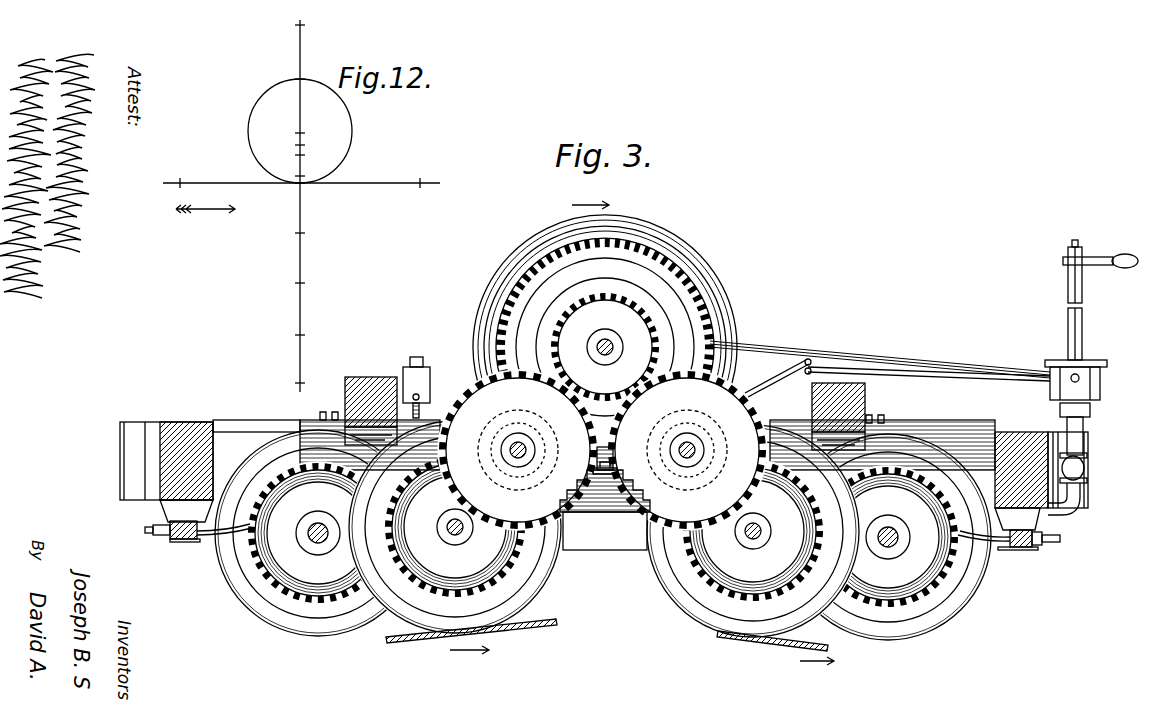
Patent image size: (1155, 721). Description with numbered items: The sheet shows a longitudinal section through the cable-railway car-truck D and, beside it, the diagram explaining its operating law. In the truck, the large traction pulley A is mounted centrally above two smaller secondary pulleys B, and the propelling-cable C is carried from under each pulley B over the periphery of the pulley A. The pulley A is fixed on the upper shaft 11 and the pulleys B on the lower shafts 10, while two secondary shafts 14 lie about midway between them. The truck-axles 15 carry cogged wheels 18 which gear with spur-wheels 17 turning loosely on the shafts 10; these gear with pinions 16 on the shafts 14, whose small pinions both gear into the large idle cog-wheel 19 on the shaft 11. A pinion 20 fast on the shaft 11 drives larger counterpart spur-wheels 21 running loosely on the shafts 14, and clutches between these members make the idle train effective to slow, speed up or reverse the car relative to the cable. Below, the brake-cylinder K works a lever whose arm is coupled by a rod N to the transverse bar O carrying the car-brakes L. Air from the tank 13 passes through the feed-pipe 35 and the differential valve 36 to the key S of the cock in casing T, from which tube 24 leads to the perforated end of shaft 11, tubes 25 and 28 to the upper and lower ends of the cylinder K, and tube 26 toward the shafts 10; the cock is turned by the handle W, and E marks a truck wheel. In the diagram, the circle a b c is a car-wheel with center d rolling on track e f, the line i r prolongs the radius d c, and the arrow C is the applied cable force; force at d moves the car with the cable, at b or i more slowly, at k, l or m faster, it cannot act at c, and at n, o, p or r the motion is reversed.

In FIG. 3, the main cable-pulley A is at (598, 333).
In FIG. 3, the large cog-wheel 19 is at (546, 441).
In FIG. 3, the pinion 20 is at (605, 347).
In FIG. 3, the main pulley-shaft 11 is at (599, 346).
In FIG. 3, the counterpart spur-wheels 21 is at (521, 408).
In FIG. 3, the pinions 16 is at (486, 457).
In FIG. 3, the secondary shafts 14 is at (515, 453).
In FIG. 3, the tank 13 is at (606, 506).
In FIG. 3, the air-cylinder K is at (612, 469).
In FIG. 3, the secondary pulley-shafts 10 is at (450, 525).
In FIG. 3, the spur-wheels 17 is at (604, 529).
In FIG. 3, the secondary cable-pulleys B is at (604, 529).
In FIG. 3, the roll E is at (603, 535).
In FIG. 3, the cogged wheels 18 is at (326, 470).
In FIG. 3, the truck-axles 15 is at (314, 530).
In FIG. 3, the car-truck D is at (375, 390).
In FIG. 3, the second connecting-tube 25 is at (778, 350).
In FIG. 3, the third connecting-tube 26 is at (937, 380).
In FIG. 3, the fourth connecting-tube 28 is at (766, 384).
In FIG. 3, the first connecting-tube 24 is at (1071, 380).
In FIG. 3, the casing T is at (1100, 386).
In FIG. 3, the key S is at (1068, 333).
In FIG. 3, the hand wheel W is at (1105, 266).
In FIG. 3, the differential valve 36 is at (1088, 468).
In FIG. 3, the feed-pipe 35 is at (1062, 510).
In FIG. 3, the car-brakes L is at (205, 524).
In FIG. 3, the transverse bar O is at (175, 540).
In FIG. 3, the coupling-rod N is at (603, 535).
In FIG. 12, the propelling-cable C is at (205, 203).
In FIG. 3, the propelling-cable C is at (410, 640).
In FIG. 12, the point on car-wheel circle a is at (296, 131).
In FIG. 12, the point on car-wheel circle b is at (305, 72).
In FIG. 12, the point of contact with track c is at (294, 191).
In FIG. 12, the center of car-wheel d is at (294, 132).
In FIG. 12, the end of track line e is at (180, 176).
In FIG. 12, the end of track line f is at (417, 176).
In FIG. 12, the point on prolonged radius i is at (292, 25).
In FIG. 12, the point on vertical radius k is at (306, 145).
In FIG. 12, the point on vertical radius l is at (295, 156).
In FIG. 12, the point on vertical radius m is at (308, 175).
In FIG. 12, the point below track n is at (292, 233).
In FIG. 12, the point below track o is at (292, 283).
In FIG. 12, the point below track p is at (291, 334).
In FIG. 12, the lower end of prolonged radius r is at (292, 383).